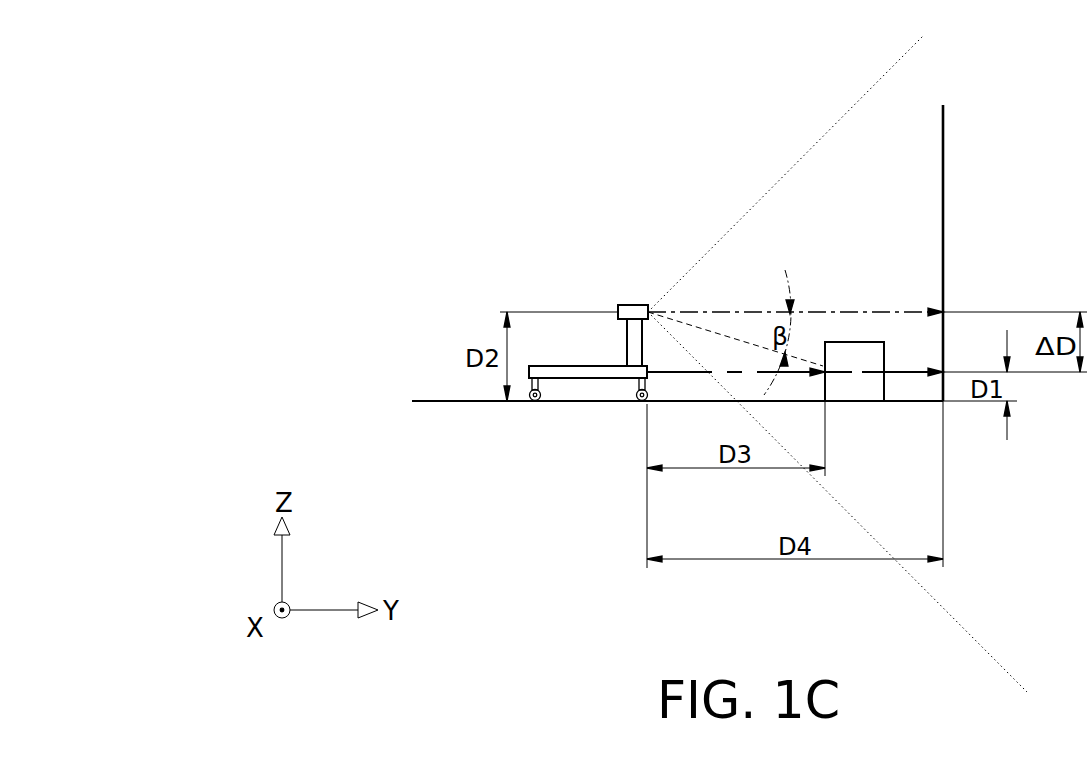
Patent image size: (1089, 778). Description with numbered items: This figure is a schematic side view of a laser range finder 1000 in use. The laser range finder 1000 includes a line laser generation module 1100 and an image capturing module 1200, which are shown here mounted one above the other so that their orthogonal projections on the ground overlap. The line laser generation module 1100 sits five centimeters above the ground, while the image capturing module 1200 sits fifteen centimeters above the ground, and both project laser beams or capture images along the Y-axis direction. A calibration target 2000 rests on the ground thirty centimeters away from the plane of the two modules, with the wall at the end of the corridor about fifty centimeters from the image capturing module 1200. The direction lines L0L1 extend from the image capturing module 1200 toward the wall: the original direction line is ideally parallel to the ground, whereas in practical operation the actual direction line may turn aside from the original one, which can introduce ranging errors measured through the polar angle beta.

The laser range finder 1000 is at (572, 311).
The line laser generation module 1100 is at (574, 367).
The image capturing module 1200 is at (627, 301).
The calibration target 2000 is at (866, 385).
The direction lines L0 and L1 L0L1 is at (840, 310).